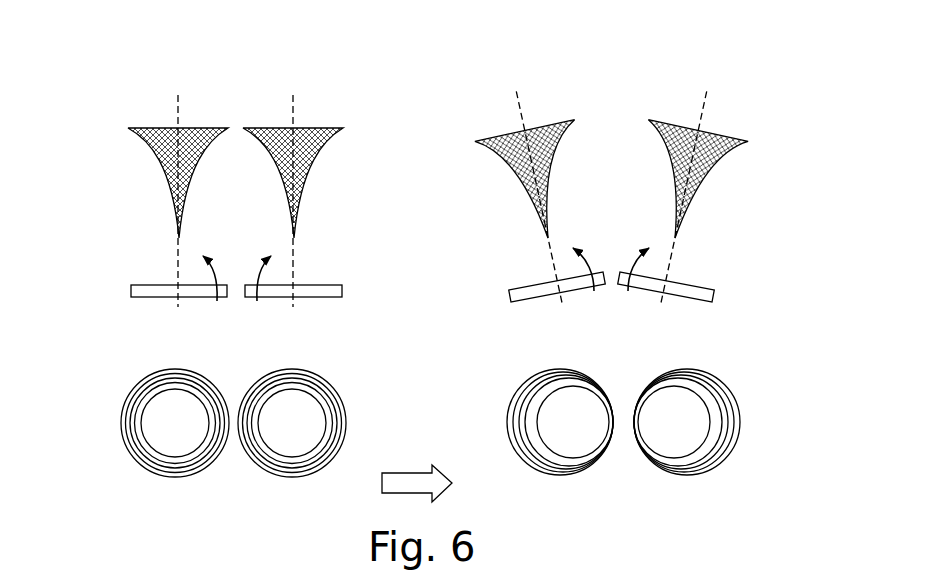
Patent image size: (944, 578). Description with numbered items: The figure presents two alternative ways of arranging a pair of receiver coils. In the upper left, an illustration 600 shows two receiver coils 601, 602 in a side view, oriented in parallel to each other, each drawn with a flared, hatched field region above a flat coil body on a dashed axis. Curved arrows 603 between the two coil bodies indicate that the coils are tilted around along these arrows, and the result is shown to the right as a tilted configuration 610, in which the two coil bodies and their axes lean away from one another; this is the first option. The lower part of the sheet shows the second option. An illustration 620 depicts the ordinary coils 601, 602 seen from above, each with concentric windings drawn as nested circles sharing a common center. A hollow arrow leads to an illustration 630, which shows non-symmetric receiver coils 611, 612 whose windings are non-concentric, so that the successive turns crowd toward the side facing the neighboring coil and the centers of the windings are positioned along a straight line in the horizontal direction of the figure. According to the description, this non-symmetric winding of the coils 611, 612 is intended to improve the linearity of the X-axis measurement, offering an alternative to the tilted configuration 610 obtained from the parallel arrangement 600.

The illustration 600 is at (222, 92).
The receiver coil 601 is at (190, 292).
The receiver coil 602 is at (327, 292).
The arrows 603 is at (247, 278).
The tilted configuration 610 is at (608, 90).
The non-symmetric receiver coil 611 is at (547, 468).
The non-symmetric receiver coil 612 is at (693, 468).
The illustration 620 is at (118, 368).
The illustration 630 is at (710, 358).